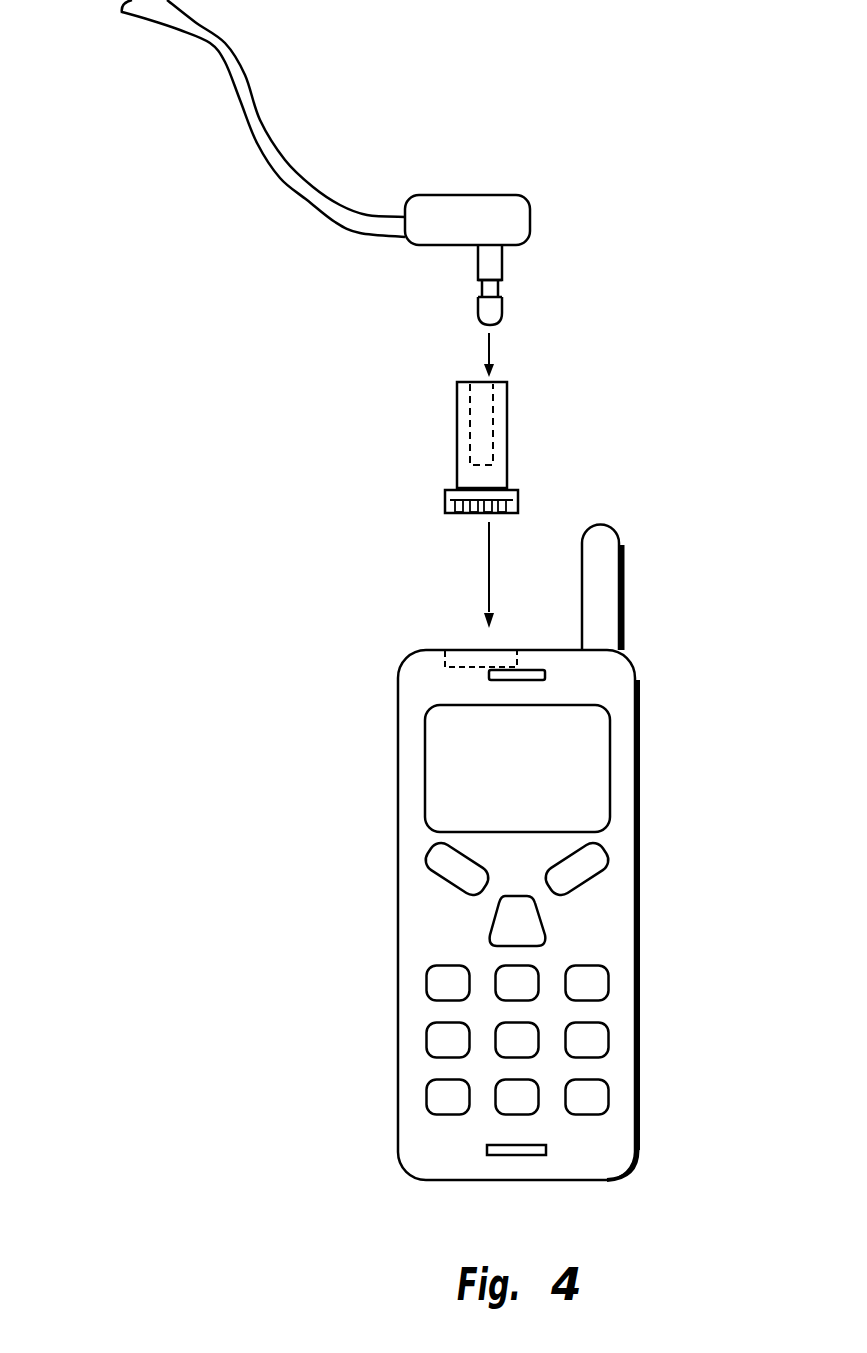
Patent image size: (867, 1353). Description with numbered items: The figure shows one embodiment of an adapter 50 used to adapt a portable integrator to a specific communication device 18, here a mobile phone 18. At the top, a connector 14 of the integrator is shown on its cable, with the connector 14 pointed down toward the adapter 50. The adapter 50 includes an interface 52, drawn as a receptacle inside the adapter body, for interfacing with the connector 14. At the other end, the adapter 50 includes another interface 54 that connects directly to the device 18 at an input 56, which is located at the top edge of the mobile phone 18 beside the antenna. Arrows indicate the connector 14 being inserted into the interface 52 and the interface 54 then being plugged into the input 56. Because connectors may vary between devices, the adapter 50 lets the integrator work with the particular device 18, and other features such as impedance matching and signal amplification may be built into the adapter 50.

The connector 14 is at (517, 222).
The communication device 18 is at (640, 918).
The adapter 50 is at (512, 435).
The interface 52 is at (497, 400).
The interface 54 is at (520, 498).
The input 56 is at (463, 657).